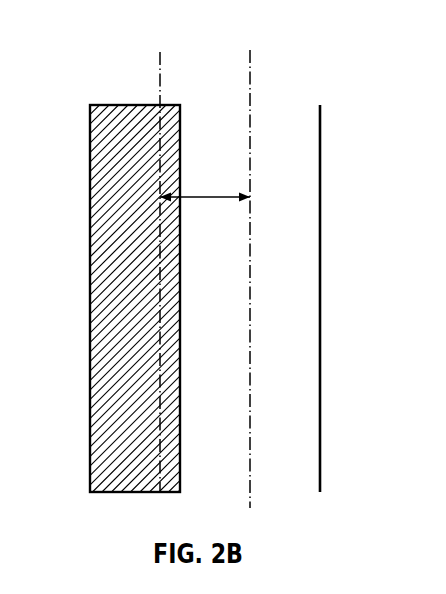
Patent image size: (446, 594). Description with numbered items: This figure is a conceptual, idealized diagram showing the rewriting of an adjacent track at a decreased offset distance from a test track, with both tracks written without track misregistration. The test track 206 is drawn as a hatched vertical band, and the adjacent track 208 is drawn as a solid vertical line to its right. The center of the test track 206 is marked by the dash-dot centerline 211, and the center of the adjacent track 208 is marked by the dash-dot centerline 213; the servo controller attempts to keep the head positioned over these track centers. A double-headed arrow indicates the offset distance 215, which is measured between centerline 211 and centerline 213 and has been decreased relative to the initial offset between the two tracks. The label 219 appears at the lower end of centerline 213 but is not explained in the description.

The test track 206 is at (133, 292).
The adjacent track 208 is at (277, 294).
The centerline 211 is at (160, 257).
The centerline 213 is at (249, 265).
The offset distance 215 is at (205, 184).
The axis label 219 is at (251, 520).